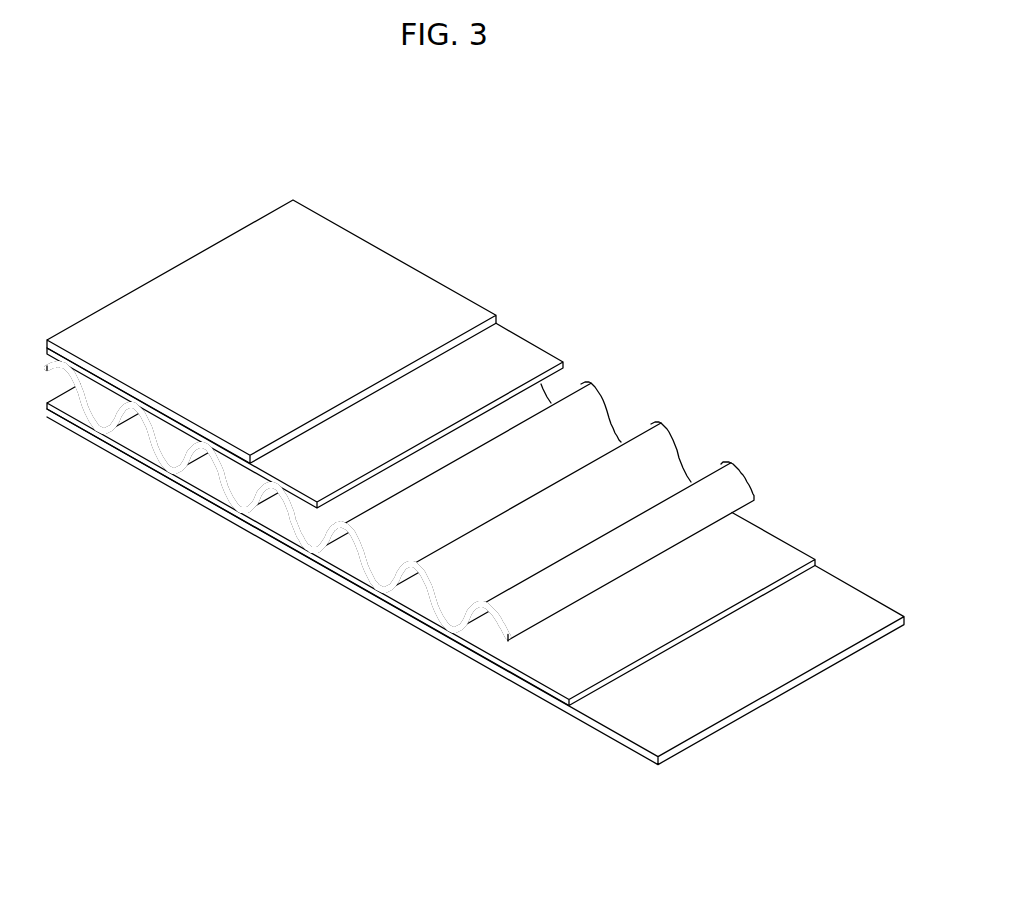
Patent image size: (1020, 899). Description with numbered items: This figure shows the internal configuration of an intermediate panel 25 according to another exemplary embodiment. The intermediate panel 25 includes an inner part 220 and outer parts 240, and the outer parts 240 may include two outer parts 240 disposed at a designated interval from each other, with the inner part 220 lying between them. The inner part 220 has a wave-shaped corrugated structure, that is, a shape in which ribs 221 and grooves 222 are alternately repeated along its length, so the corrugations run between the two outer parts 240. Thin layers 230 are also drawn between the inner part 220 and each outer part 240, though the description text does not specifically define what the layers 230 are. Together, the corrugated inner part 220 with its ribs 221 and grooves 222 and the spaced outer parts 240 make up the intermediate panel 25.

The intermediate panel 25 is at (93, 180).
The inner part 220 is at (400, 501).
The rib 221 is at (297, 553).
The groove 222 is at (367, 593).
The thin sheet layer 230 is at (520, 357).
The outer part 240 is at (398, 278).